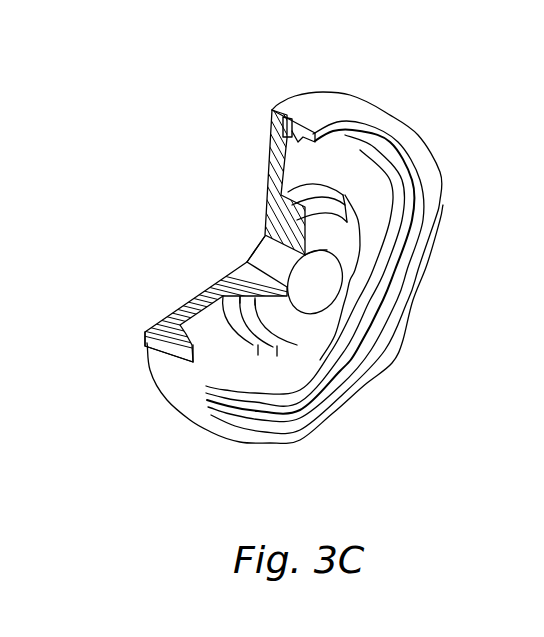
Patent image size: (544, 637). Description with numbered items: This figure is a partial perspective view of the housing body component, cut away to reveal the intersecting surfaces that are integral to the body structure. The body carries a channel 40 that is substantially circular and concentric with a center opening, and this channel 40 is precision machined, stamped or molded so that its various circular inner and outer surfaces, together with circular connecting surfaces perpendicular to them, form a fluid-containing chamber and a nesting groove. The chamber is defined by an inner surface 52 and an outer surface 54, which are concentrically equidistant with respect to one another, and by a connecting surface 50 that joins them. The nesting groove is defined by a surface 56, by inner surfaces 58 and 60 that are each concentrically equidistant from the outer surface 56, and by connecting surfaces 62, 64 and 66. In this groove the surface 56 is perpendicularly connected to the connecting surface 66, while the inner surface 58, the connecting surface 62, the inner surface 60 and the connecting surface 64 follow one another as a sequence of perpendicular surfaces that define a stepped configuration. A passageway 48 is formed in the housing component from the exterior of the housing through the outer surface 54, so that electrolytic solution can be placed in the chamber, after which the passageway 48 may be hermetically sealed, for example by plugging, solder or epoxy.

The channel 40 is at (283, 195).
The passageway 48 is at (285, 122).
The connecting surface 50 is at (361, 171).
The inner surface 52 is at (290, 157).
The outer surface 54 is at (390, 182).
The surface 56 is at (385, 330).
The inner surface 58 is at (266, 213).
The inner surface 60 is at (225, 290).
The connecting surface 62 is at (425, 228).
The connecting surface 64 is at (340, 207).
The connecting surface 66 is at (397, 267).